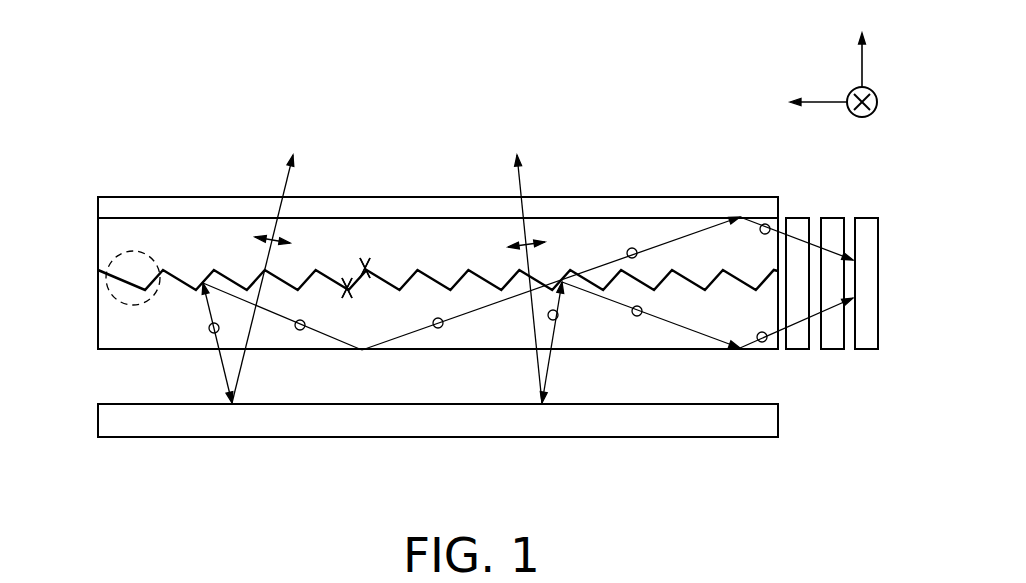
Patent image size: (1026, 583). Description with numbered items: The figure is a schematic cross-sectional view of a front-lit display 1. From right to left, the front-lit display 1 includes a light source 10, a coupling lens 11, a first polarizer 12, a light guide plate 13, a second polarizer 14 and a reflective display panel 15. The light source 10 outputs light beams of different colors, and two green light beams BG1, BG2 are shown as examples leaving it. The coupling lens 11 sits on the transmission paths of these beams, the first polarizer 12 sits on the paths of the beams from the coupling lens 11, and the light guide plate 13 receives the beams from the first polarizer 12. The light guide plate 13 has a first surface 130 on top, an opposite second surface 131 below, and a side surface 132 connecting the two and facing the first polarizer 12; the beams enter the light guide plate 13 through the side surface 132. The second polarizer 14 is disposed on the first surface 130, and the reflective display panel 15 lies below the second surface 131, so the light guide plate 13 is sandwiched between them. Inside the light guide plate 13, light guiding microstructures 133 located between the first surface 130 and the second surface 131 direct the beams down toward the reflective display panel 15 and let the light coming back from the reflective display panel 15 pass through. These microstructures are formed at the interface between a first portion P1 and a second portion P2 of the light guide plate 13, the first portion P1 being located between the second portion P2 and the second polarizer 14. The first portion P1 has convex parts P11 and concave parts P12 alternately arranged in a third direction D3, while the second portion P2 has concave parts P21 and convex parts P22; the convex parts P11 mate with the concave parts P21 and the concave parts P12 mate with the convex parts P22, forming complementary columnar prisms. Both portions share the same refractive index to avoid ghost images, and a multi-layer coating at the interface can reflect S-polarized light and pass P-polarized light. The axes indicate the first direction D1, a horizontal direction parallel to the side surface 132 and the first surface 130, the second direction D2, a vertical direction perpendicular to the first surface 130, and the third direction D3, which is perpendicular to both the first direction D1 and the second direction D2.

The front-lit display 1 is at (862, 468).
The light source 10 is at (866, 350).
The coupling lens 11 is at (832, 350).
The first polarizer 12 is at (797, 350).
The light guide plate 13 is at (53, 218).
The second polarizer 14 is at (98, 207).
The reflective display panel 15 is at (98, 420).
The first surface 130 is at (127, 208).
The second surface 131 is at (141, 360).
The side surface 132 is at (784, 246).
The light guiding microstructures 133 is at (151, 253).
The first portion P1 is at (110, 243).
The second portion P2 is at (110, 307).
The convex parts P11 is at (347, 292).
The concave parts P12 is at (366, 274).
The concave parts P21 is at (346, 284).
The convex parts P22 is at (366, 266).
The green light beam BG1 is at (835, 302).
The green light beam BG2 is at (830, 250).
The first direction D1 is at (877, 108).
The second direction D2 is at (863, 45).
The third direction D3 is at (802, 105).